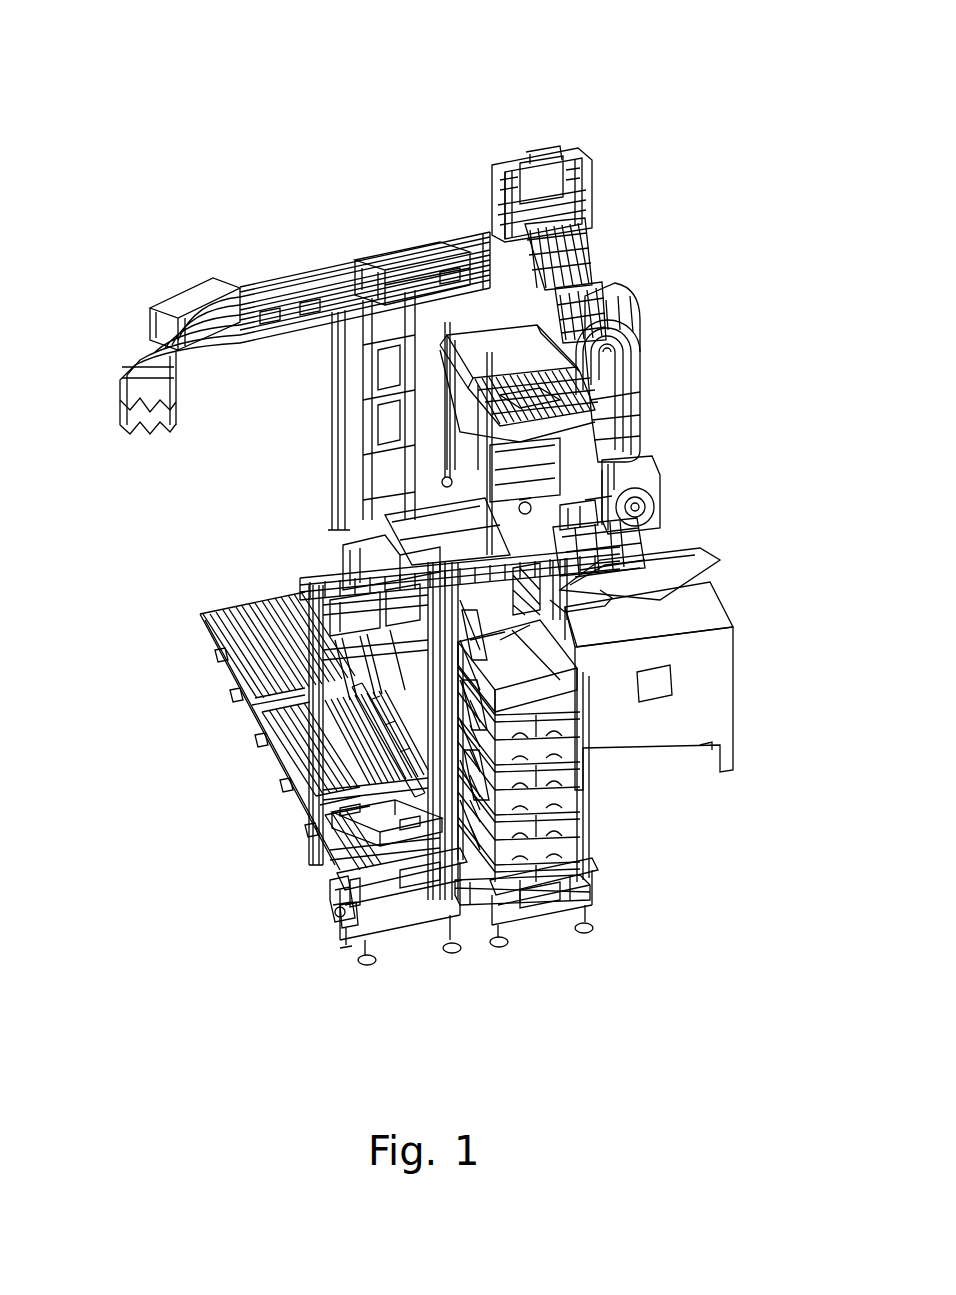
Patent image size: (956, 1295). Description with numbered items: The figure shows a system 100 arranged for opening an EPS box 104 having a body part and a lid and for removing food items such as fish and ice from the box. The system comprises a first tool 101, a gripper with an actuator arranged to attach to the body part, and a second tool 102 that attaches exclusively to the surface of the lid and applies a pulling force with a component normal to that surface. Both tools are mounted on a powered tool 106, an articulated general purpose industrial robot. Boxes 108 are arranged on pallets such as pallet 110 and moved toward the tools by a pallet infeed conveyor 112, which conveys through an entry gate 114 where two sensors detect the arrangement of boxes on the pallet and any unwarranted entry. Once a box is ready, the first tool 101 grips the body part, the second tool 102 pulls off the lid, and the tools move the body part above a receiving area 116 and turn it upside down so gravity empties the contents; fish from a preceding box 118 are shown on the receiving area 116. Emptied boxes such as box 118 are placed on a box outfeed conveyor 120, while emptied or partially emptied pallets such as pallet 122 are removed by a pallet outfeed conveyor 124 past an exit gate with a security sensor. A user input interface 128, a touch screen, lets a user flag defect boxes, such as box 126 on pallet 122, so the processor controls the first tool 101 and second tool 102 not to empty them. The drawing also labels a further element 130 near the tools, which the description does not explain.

The system 100 is at (625, 110).
The first tool 101 is at (596, 178).
The second tool 102 is at (533, 148).
The EPS box 104 is at (455, 534).
The powered tool 106 is at (624, 310).
The boxes 108 is at (697, 717).
The pallet 110 is at (587, 898).
The pallet infeed conveyor 112 is at (413, 925).
The entry gate 114 is at (567, 597).
The receiving area 116 is at (495, 420).
The preceding box 118 is at (405, 265).
The box outfeed conveyor 120 is at (295, 295).
The pallet 122 is at (343, 917).
The pallet outfeed conveyor 124 is at (320, 780).
The defect box 126 is at (336, 872).
The user input interface 128 is at (665, 682).
The end effector / gripper tray 130 is at (600, 400).